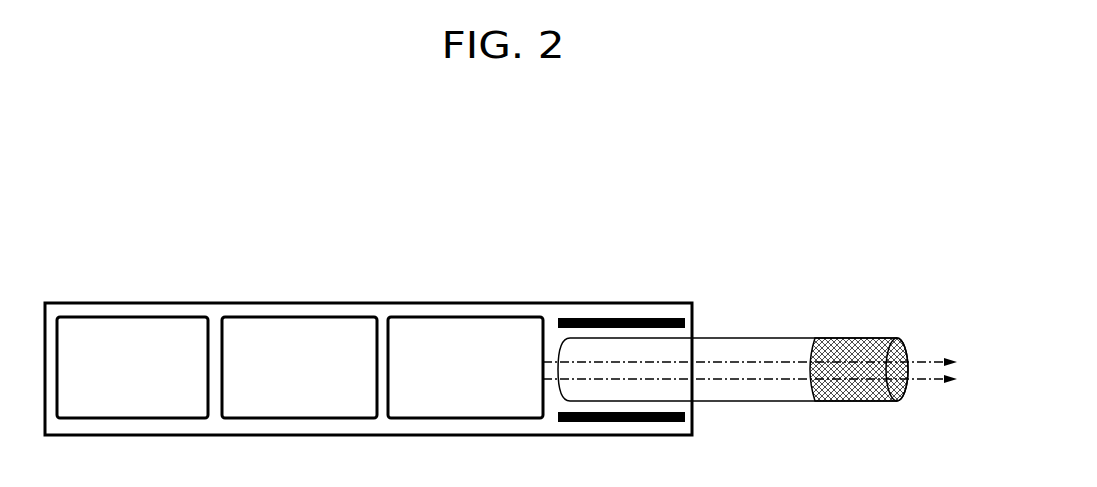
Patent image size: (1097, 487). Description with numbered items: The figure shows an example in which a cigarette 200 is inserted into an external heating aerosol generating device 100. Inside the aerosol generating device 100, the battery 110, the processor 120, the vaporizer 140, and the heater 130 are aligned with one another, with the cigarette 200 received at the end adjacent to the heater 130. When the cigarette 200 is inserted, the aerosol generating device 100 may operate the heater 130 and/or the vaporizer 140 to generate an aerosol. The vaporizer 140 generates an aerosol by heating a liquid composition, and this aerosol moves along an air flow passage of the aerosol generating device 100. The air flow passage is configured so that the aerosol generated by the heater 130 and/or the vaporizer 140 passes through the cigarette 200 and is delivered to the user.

The aerosol generating device 100 is at (840, 272).
The battery 110 is at (131, 316).
The processor 120 is at (298, 316).
The heater 130 is at (620, 318).
The vaporizer 140 is at (465, 316).
The cigarette 200 is at (770, 337).